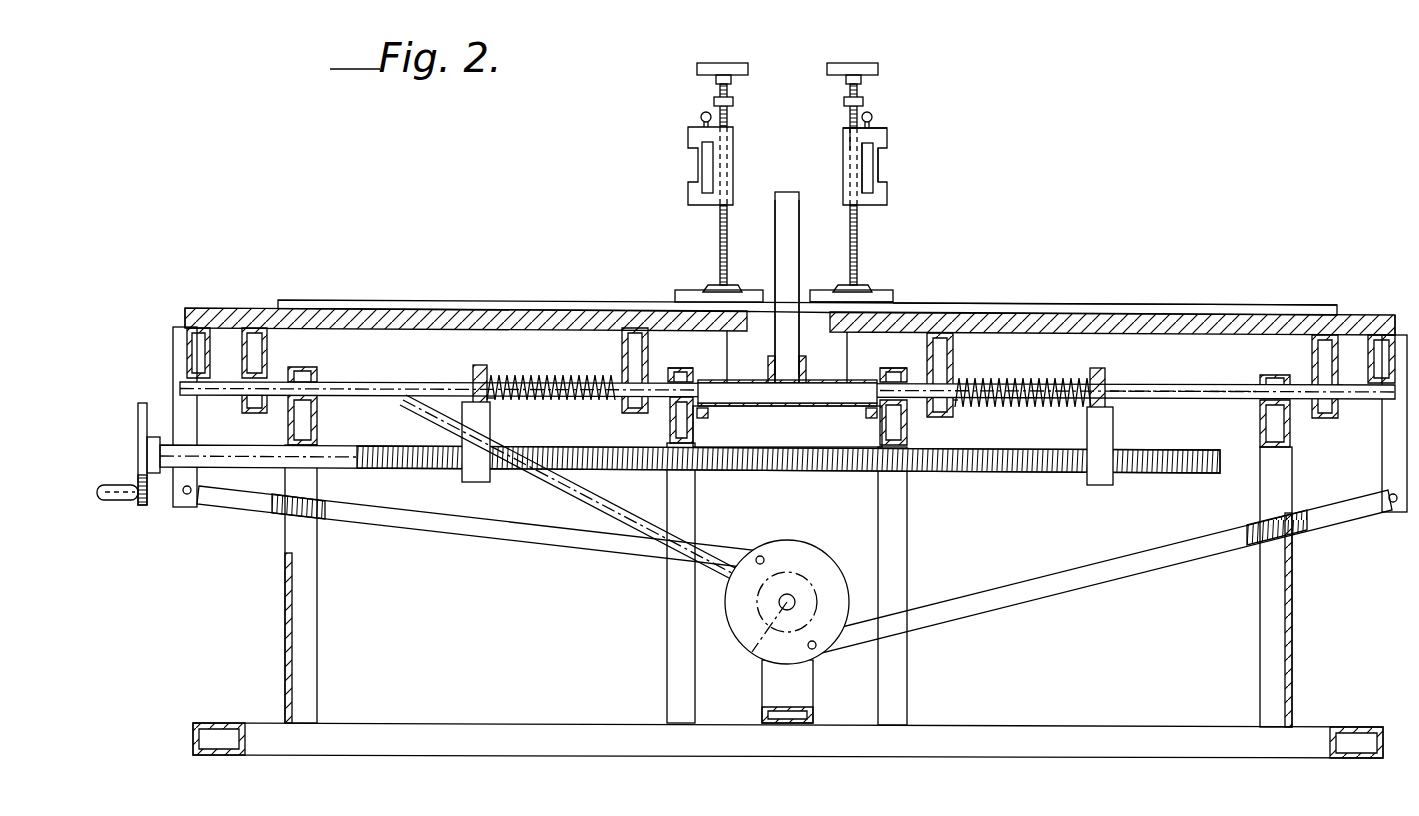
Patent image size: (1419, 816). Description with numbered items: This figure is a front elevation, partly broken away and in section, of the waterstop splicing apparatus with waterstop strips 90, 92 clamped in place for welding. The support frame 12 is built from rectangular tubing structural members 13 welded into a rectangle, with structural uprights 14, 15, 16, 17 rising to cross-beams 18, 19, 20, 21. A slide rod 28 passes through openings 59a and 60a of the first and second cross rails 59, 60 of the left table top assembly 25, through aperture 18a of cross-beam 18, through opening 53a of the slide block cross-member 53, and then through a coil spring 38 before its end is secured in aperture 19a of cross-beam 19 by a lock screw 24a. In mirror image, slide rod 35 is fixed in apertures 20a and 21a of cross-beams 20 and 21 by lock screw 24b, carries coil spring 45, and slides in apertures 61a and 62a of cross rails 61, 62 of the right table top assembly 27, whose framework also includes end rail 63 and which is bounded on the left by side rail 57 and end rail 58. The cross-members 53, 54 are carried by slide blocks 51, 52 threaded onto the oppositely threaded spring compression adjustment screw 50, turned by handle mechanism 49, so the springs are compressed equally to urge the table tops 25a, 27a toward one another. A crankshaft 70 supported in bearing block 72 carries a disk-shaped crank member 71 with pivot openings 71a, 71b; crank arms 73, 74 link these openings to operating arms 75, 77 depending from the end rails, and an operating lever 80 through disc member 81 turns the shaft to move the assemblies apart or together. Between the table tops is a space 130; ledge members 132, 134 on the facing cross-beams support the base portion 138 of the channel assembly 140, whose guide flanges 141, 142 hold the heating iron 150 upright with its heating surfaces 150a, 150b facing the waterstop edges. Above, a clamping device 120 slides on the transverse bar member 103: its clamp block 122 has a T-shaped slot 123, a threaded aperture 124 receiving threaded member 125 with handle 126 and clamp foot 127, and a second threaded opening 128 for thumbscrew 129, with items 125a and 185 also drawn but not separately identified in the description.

The support frame 12 is at (762, 542).
The rectangular tubing structural members 13 is at (1030, 727).
The structural upright 14 is at (320, 613).
The structural upright 15 is at (667, 603).
The structural upright 16 is at (910, 570).
The structural upright 17 is at (1262, 633).
The cross-beam 18 is at (312, 370).
The aperture 18a is at (318, 396).
The cross-beam 19 is at (680, 368).
The aperture 19a is at (672, 400).
The cross-beam 20 is at (898, 368).
The aperture 20a is at (908, 402).
The cross-beam 21 is at (1262, 378).
The aperture 21a is at (1262, 396).
The lock screw 24a is at (688, 370).
The lock screw 24b is at (883, 372).
The left table top assembly 25 is at (253, 308).
The table top 25a is at (185, 306).
The right table top assembly 27 is at (1265, 318).
The table top 27a is at (1348, 318).
The slide rod 28 is at (390, 385).
The slide rod 35 is at (1175, 390).
The coil spring 38 is at (540, 375).
The coil spring 45 is at (1040, 378).
The handle mechanism 49 is at (138, 416).
The spring compression adjustment screw 50 is at (740, 472).
The slide block 51 is at (468, 470).
The slide block 52 is at (1100, 485).
The slide block cross-member 53 is at (478, 370).
The opening 53a is at (490, 398).
The slide block cross-member 54 is at (1103, 370).
The side rail 57 is at (412, 340).
The end rail 58 is at (187, 338).
The first cross rail 59 is at (268, 346).
The opening 59a is at (243, 395).
The second cross rail 60 is at (622, 346).
The aperture 60a is at (612, 396).
The cross rail 61 is at (1312, 349).
The aperture 61a is at (1338, 385).
The cross rail 62 is at (953, 347).
The aperture 62a is at (957, 400).
The end rail 63 is at (1368, 362).
The crankshaft 70 is at (780, 600).
The crank member 71 is at (806, 545).
The pivot opening 71a is at (760, 556).
The pivot opening 71b is at (815, 649).
The bearing block 72 is at (762, 690).
The crank arm 73 is at (552, 540).
The crank arm 74 is at (1067, 585).
The operating arm 75 is at (176, 390).
The operating arm 77 is at (1382, 462).
The operating lever 80 is at (540, 490).
The disc member 81 is at (752, 652).
The waterstop strip 90 is at (487, 298).
The waterstop strip 92 is at (1040, 303).
The transverse bar member 103 is at (884, 180).
The clamping device 120 is at (878, 101).
The clamp block 122 is at (888, 150).
The T-shaped slot 123 is at (882, 165).
The threaded aperture 124 is at (855, 143).
The threaded member 125 is at (847, 100).
The lock nut 125a is at (850, 112).
The handle 126 is at (872, 63).
The clamp foot 127 is at (872, 288).
The second threaded opening 128 is at (872, 135).
The thumbscrew 129 is at (875, 117).
The space 130 is at (765, 303).
The ledge member 132 is at (702, 412).
The ledge member 134 is at (868, 412).
The base portion 138 is at (757, 404).
The channel assembly 140 is at (787, 426).
The guide flange 141 is at (770, 372).
The guide flange 142 is at (803, 372).
The heating iron 150 is at (786, 267).
The heating surface 150a is at (775, 225).
The heating surface 150b is at (800, 240).
The base plate edge 185 is at (893, 298).